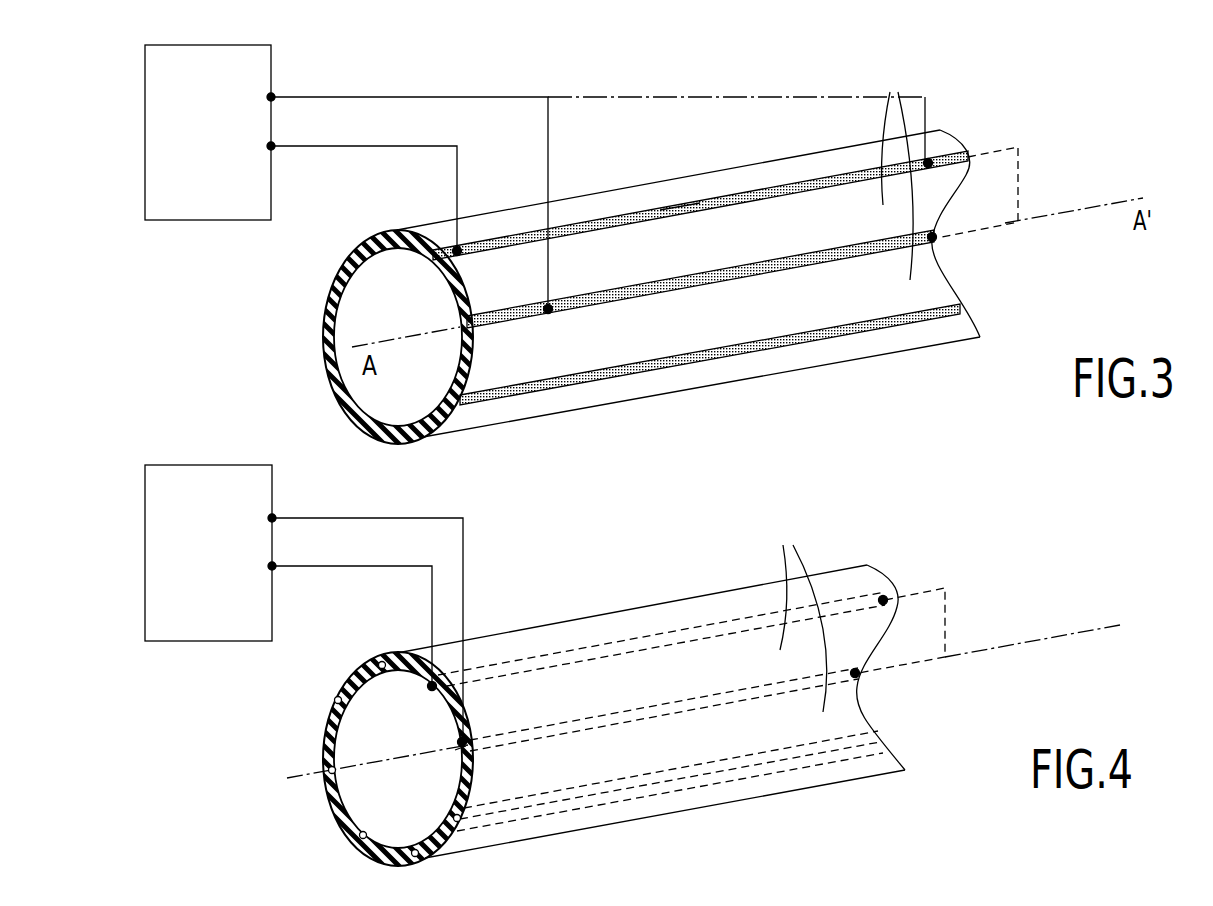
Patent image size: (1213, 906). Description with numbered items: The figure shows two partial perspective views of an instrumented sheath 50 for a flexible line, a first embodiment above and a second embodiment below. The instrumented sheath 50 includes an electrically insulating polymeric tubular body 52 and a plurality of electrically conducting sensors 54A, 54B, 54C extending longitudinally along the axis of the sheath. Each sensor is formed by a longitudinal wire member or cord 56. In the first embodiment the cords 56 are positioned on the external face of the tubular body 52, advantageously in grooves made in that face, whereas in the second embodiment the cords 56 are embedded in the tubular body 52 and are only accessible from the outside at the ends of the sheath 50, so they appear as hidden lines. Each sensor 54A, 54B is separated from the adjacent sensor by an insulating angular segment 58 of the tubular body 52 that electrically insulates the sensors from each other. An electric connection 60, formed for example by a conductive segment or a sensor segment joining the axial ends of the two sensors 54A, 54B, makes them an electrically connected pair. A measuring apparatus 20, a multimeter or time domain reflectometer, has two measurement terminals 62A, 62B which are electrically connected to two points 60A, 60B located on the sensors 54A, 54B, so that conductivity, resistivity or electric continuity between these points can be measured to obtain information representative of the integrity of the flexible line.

In FIG. 3, the measuring apparatus 20 is at (203, 43).
In FIG. 4, the measuring apparatus 20 is at (205, 462).
In FIG. 3, the instrumented sheath 50 is at (815, 407).
In FIG. 4, the instrumented sheath 50 is at (800, 880).
In FIG. 3, the tubular body 52 is at (443, 422).
In FIG. 4, the tubular body 52 is at (442, 843).
In FIG. 3, the first sensor 54A is at (609, 216).
In FIG. 4, the first sensor 54A is at (612, 646).
In FIG. 3, the second sensor 54B is at (813, 268).
In FIG. 4, the second sensor 54B is at (777, 694).
In FIG. 3, the third sensor 54C is at (886, 338).
In FIG. 4, the third sensor 54C is at (671, 789).
In FIG. 3, the cord 56 is at (683, 205).
In FIG. 4, the cord 56 is at (456, 749).
In FIG. 3, the insulating angular segment 58 is at (898, 167).
In FIG. 4, the insulating angular segment 58 is at (801, 611).
In FIG. 3, the electric connection 60 is at (1020, 190).
In FIG. 4, the electric connection 60 is at (901, 630).
In FIG. 3, the first measurement point 60A is at (459, 248).
In FIG. 4, the first measurement point 60A is at (431, 687).
In FIG. 3, the second measurement point 60B is at (549, 312).
In FIG. 4, the second measurement point 60B is at (470, 747).
In FIG. 3, the first measurement terminal 62A is at (272, 147).
In FIG. 4, the first measurement terminal 62A is at (273, 567).
In FIG. 3, the second measurement terminal 62B is at (272, 96).
In FIG. 4, the second measurement terminal 62B is at (273, 517).